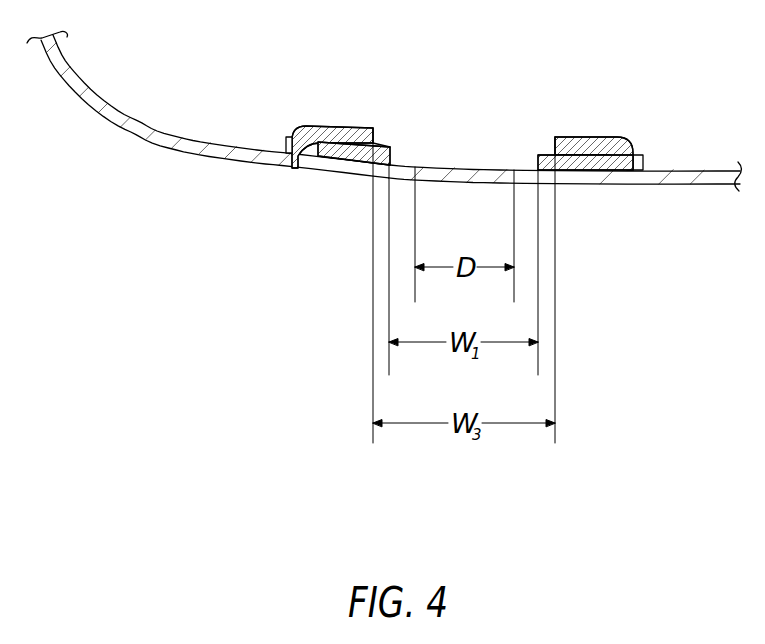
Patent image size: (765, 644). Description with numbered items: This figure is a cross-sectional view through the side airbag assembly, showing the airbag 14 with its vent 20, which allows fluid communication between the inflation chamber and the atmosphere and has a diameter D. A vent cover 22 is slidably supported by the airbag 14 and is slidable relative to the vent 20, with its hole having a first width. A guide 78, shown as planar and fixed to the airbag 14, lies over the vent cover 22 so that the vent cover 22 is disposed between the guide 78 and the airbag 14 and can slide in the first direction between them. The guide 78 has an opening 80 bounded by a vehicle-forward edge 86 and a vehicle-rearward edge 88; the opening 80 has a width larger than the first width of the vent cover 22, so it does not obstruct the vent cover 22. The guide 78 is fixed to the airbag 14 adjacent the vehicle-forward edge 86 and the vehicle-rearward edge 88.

The airbag 14 is at (133, 131).
The vent 20 is at (457, 175).
The vent cover 22 is at (340, 153).
The guide 78 is at (330, 125).
The opening 80 is at (375, 138).
The vehicle-forward edge 86 is at (377, 143).
The vehicle-rearward edge 88 is at (555, 148).